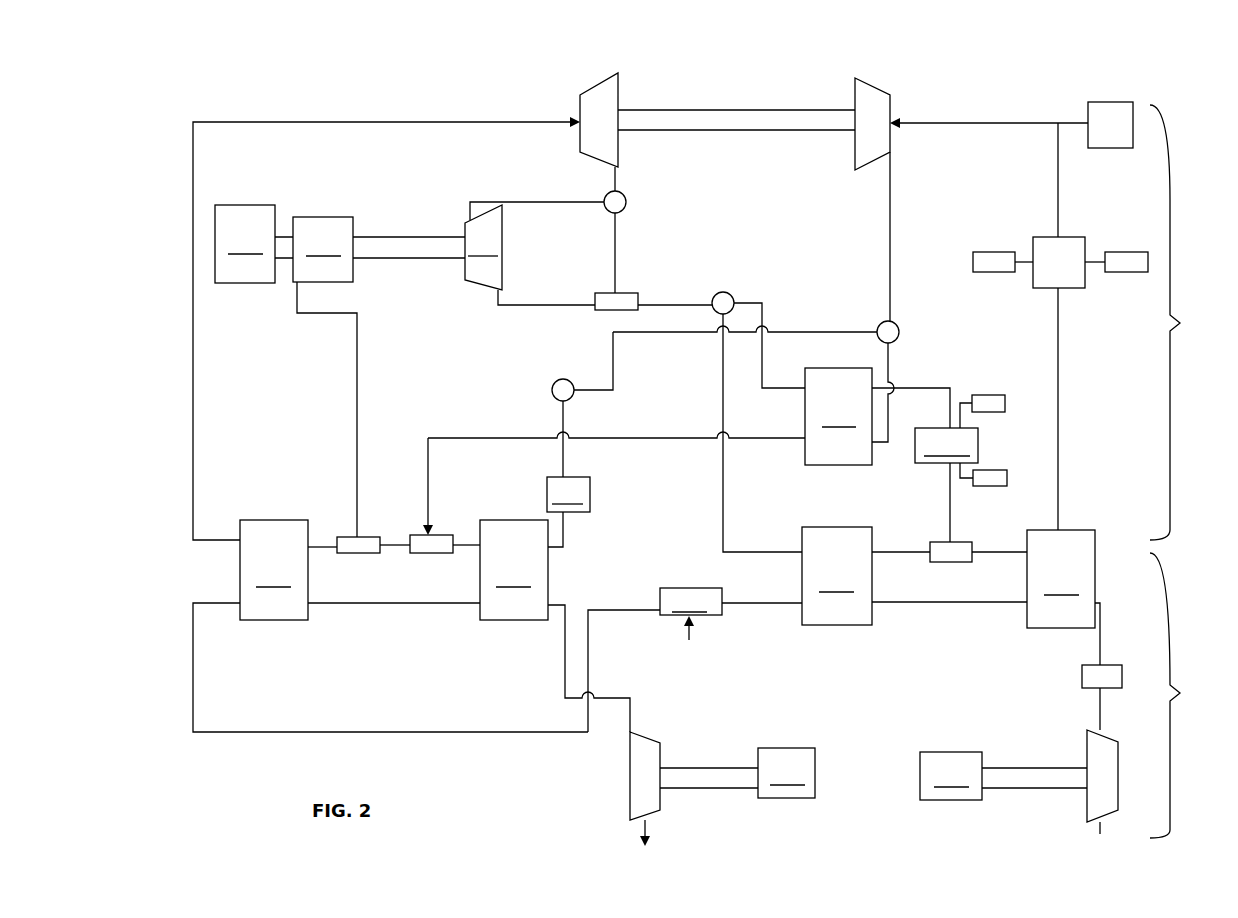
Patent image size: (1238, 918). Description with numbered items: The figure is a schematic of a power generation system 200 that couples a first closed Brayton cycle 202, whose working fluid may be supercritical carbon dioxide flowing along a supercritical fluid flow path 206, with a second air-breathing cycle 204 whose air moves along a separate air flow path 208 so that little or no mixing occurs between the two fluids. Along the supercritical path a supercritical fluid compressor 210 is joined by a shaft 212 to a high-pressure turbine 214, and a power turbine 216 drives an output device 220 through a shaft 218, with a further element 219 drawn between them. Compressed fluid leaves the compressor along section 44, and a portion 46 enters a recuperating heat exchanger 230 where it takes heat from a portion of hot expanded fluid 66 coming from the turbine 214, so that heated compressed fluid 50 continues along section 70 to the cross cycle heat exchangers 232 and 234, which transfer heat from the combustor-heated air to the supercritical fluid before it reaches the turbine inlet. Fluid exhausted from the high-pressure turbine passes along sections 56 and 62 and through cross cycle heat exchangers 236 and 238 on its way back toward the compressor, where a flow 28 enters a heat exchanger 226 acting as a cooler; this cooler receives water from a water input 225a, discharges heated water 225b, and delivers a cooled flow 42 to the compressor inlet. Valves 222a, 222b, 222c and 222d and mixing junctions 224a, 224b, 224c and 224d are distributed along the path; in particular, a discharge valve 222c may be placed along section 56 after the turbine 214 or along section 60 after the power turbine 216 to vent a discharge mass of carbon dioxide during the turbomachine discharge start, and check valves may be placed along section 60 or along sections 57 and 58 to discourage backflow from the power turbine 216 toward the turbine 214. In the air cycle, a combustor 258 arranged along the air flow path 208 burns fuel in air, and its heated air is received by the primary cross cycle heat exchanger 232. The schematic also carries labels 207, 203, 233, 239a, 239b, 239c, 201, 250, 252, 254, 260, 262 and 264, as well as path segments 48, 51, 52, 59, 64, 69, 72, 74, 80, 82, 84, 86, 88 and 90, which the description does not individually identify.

The power generation system 200 is at (236, 68).
The supercritical fluid flow path 206 is at (455, 100).
The supercritical fluid compressor 210 is at (878, 102).
The shaft 212 is at (728, 110).
The first supercritical fluid turbine 214 is at (593, 102).
The second supercritical fluid turbine 216 is at (483, 247).
The shaft 218 is at (432, 237).
The motor 219 is at (323, 249).
The output device 220 is at (254, 244).
The cooled flow of supercritical fluid 42 is at (950, 123).
The air filter 207 is at (1100, 116).
The flow of supercritical fluid 28 is at (1060, 403).
The heat exchanger 226 is at (1065, 258).
The water input 225a is at (990, 262).
The flow of heated water 225b is at (1132, 270).
The first closed Brayton cycle 202 is at (1189, 322).
The second cycle 204 is at (1192, 695).
The section of supercritical fluid flow path 44 is at (892, 216).
The valve 222a is at (899, 333).
The portion of compressed supercritical fluid 46 is at (890, 372).
The conduit 48 is at (815, 332).
The section of supercritical fluid flow path 60 is at (690, 331).
The valve 222d is at (731, 295).
The portion of hot expanded supercritical fluid 66 is at (764, 362).
The section of supercritical fluid flow path 62 is at (722, 373).
The recuperating heat exchanger 230 is at (838, 416).
The controller 239a is at (925, 465).
The sensor 239c is at (995, 403).
The sensor 239b is at (1005, 478).
The mixing junction 224d is at (955, 542).
The conduit 64 is at (898, 552).
The conduit 69 is at (1005, 553).
The cross cycle heat exchanger 236 is at (837, 576).
The cross cycle heat exchanger 238 is at (1061, 579).
The conduit 82 is at (968, 604).
The conduit 80 is at (1102, 642).
The turbine 250 is at (1108, 806).
The exhaust line 201 is at (1095, 832).
The shaft 252 is at (1037, 775).
The generator 254 is at (951, 776).
The primary cross cycle heat exchanger 232 is at (274, 570).
The cross cycle heat exchanger 234 is at (514, 570).
The sensor 233 is at (568, 512).
The section of supercritical fluid flow path 70 is at (566, 456).
The valve 222b is at (560, 378).
The heated compressed supercritical fluid 50 is at (778, 440).
The mixing junction 224a is at (447, 536).
The conduit 51 is at (396, 544).
The conduit 74 is at (462, 552).
The conduit 52 is at (326, 545).
The mixing junction 224b is at (360, 552).
The conduit 72 is at (356, 408).
The conduit 88 is at (412, 605).
The air flow path 208 is at (478, 745).
The conduit 86 is at (592, 660).
The conduit 90 is at (632, 714).
The turbine 260 is at (638, 784).
The shaft 262 is at (732, 768).
The generator 264 is at (786, 773).
The combustor 258 is at (691, 601).
The input 203 is at (689, 639).
The conduit 84 is at (768, 605).
The section of supercritical fluid flow path 57 is at (556, 202).
The discharge valve 222c is at (627, 203).
The section of supercritical fluid flow path 56 is at (618, 180).
The section of supercritical fluid flow path 58 is at (618, 231).
The conduit 59 is at (566, 304).
The mixing junction 224c is at (630, 293).